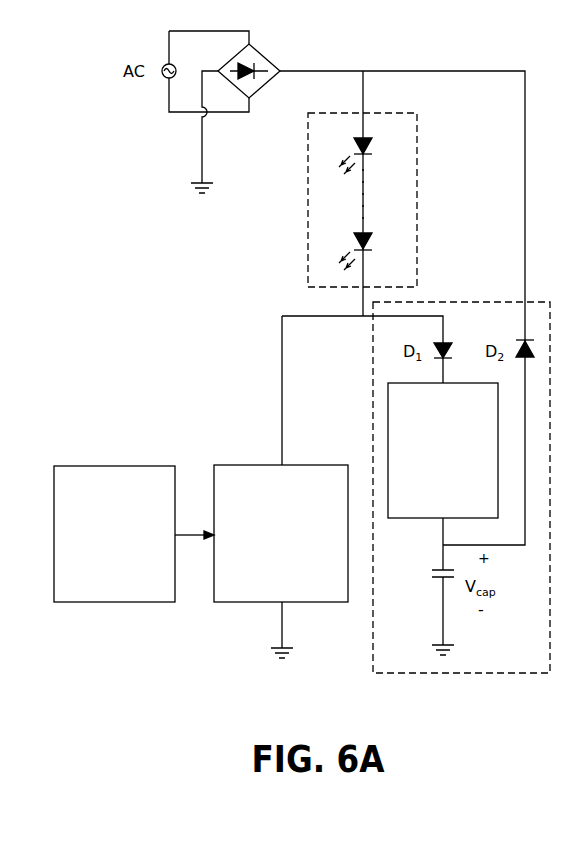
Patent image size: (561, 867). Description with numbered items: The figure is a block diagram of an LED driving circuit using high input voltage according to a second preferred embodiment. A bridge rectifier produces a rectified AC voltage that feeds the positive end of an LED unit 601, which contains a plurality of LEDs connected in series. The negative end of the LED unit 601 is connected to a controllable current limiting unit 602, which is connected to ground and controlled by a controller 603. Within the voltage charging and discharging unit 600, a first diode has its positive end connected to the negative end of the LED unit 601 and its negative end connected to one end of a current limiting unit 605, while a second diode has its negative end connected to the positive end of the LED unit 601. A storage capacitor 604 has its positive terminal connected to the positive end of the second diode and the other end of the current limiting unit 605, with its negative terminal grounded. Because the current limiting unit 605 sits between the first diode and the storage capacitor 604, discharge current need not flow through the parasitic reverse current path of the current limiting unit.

The voltage charging and discharging unit 600 is at (461, 302).
The LED unit 601 is at (308, 199).
The controllable current limiting unit 602 is at (248, 465).
The controller 603 is at (113, 466).
The storage capacitor 604 is at (432, 584).
The current limiting unit 605 is at (388, 414).